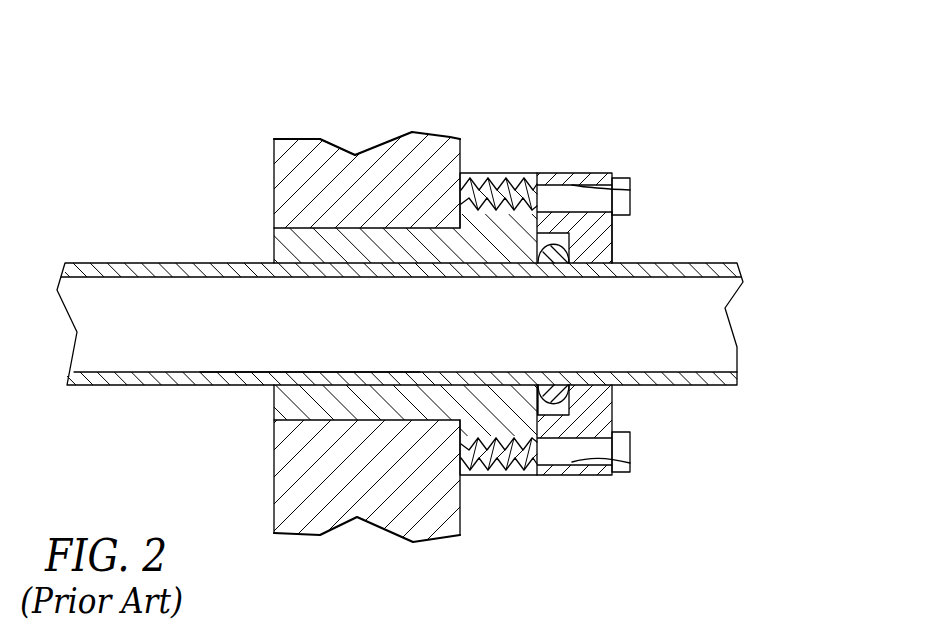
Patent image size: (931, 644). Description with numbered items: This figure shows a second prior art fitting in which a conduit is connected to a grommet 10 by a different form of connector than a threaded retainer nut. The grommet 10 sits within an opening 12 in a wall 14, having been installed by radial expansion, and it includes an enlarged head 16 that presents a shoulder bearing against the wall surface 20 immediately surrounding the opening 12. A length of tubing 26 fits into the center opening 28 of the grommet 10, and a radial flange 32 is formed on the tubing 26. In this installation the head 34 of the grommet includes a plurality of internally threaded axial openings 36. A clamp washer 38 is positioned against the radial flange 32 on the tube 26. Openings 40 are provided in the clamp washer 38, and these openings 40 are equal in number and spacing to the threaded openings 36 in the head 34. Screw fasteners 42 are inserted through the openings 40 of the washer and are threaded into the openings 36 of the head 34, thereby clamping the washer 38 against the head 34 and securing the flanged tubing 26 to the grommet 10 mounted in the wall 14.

The grommet 10 is at (285, 243).
The opening 12 is at (347, 230).
The wall 14 is at (343, 170).
The enlarged head 16 is at (462, 195).
The wall surface 20 is at (460, 507).
The tubing 26 is at (663, 268).
The center opening 28 is at (332, 383).
The radial flange 32 is at (565, 398).
The head 34 is at (503, 177).
The internally threaded axial openings 36 is at (527, 450).
The clamp washer 38 is at (598, 237).
The openings 40 is at (630, 190).
The screw fasteners 42 is at (622, 197).